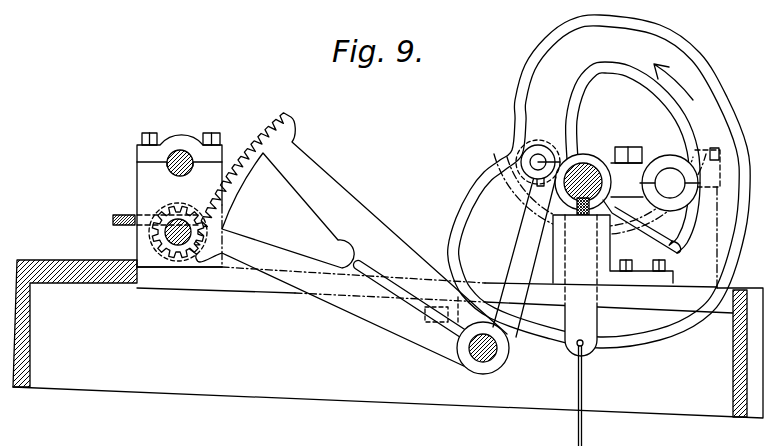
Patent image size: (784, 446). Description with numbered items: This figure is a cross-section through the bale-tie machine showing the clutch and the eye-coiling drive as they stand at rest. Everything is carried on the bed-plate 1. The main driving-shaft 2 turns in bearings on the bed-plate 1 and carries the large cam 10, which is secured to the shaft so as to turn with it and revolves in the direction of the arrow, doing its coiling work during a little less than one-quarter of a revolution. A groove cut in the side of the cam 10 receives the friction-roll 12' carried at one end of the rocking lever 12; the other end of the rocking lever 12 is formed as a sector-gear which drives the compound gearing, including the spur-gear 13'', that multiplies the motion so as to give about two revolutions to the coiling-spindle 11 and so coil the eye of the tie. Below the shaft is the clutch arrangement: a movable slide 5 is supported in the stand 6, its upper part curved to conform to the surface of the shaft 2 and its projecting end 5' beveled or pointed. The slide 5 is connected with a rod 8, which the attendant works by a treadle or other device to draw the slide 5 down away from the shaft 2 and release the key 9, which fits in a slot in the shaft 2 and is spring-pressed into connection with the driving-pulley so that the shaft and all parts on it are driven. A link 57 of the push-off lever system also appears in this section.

The bed-plate 1 is at (392, 336).
The main driving-shaft 2 is at (584, 154).
The movable slide 5 is at (581, 285).
The projecting end of slide 5' is at (522, 257).
The stand 6 is at (613, 249).
The rod 8 is at (585, 393).
The key 9 is at (601, 217).
The cam 10 is at (540, 59).
The coiling-spindle 11 is at (165, 183).
The rocking lever 12 is at (359, 243).
The friction-roll 12' is at (538, 151).
The spur-gear 13'' is at (178, 256).
The link 57 is at (150, 213).